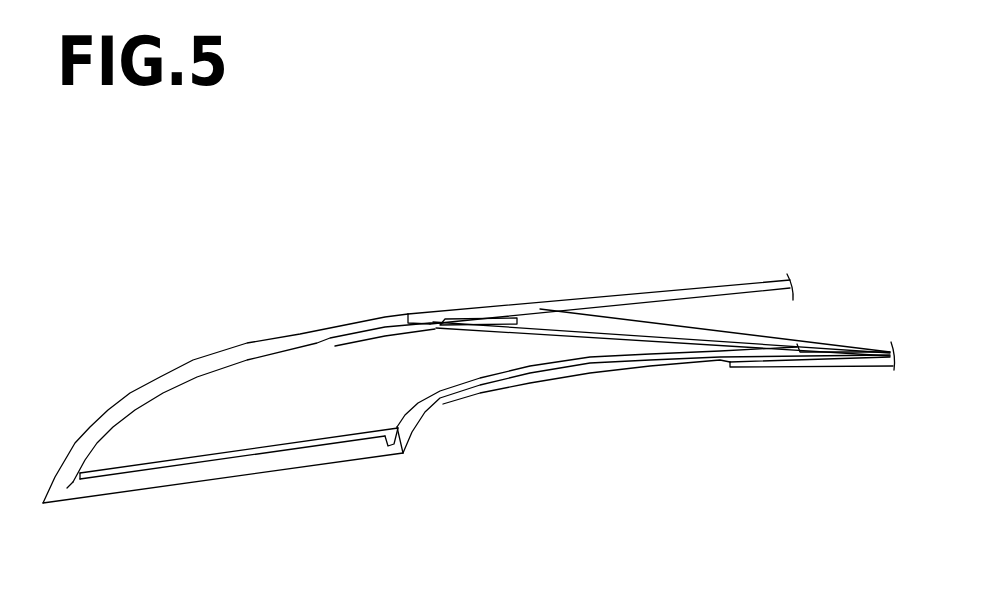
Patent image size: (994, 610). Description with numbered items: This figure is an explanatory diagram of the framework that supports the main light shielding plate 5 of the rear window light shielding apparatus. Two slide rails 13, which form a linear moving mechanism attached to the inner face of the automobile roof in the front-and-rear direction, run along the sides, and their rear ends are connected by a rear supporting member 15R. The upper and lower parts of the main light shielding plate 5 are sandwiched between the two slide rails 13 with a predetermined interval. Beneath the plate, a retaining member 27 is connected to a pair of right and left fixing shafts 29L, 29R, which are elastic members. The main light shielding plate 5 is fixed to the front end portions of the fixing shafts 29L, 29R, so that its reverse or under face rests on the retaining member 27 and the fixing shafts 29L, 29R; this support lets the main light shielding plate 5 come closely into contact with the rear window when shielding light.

The main light shielding plate 5 is at (183, 362).
The slide rails 13 is at (827, 360).
The rear supporting member 15R is at (585, 332).
The retaining member 27 is at (268, 447).
The right fixing shaft 29R is at (316, 341).
The left fixing shaft 29L is at (502, 383).